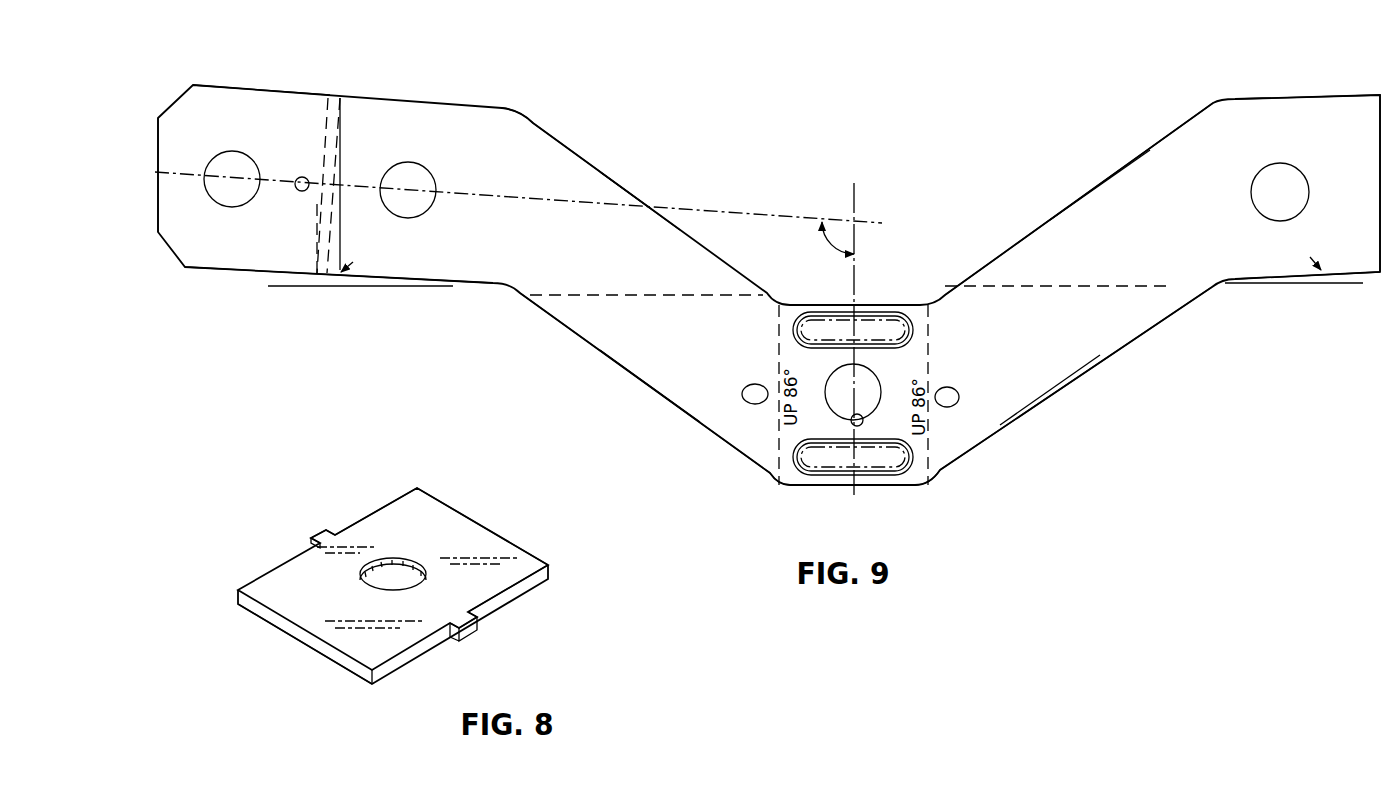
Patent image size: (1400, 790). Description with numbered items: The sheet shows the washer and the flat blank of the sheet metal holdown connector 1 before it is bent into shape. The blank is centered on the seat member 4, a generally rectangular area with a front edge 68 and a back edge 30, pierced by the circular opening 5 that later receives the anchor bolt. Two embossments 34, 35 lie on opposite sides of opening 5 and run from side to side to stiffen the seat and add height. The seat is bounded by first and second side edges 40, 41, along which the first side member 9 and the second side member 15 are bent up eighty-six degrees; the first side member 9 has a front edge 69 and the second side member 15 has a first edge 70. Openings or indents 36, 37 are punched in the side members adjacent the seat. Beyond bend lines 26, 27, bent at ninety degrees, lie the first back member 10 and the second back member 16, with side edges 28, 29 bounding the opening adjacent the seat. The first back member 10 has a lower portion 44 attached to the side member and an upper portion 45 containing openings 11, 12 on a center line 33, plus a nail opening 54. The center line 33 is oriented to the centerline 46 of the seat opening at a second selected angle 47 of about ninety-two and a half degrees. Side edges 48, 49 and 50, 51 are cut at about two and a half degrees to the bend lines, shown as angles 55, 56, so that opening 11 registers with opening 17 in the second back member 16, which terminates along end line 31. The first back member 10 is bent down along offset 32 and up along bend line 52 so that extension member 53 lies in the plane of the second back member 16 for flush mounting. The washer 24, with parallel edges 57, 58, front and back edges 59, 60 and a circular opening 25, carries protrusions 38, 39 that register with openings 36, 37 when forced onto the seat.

In FIG. 9, the structural holdown connector 1 is at (1113, 357).
In FIG. 9, the seat member 4 is at (913, 487).
In FIG. 9, the opening 5 is at (855, 421).
In FIG. 9, the first side member 9 is at (650, 338).
In FIG. 9, the first back member 10 is at (506, 106).
In FIG. 9, the opening 11 is at (423, 176).
In FIG. 9, the opening 12 is at (237, 160).
In FIG. 9, the second side member 15 is at (1030, 343).
In FIG. 9, the second back member 16 is at (1176, 127).
In FIG. 9, the opening 17 is at (1289, 173).
In FIG. 8, the washer 24 is at (455, 500).
In FIG. 8, the circular opening 25 is at (405, 562).
In FIG. 9, the bend line 26 is at (722, 294).
In FIG. 9, the bend line 27 is at (1163, 287).
In FIG. 9, the side edge 28 is at (633, 196).
In FIG. 9, the side edge 29 is at (1096, 183).
In FIG. 9, the back edge 30 is at (862, 305).
In FIG. 9, the end line 31 is at (1383, 110).
In FIG. 9, the offset 32 is at (340, 132).
In FIG. 9, the center line 33 is at (484, 192).
In FIG. 9, the embossment 34 is at (864, 487).
In FIG. 9, the embossment 35 is at (884, 312).
In FIG. 9, the opening 36 is at (755, 386).
In FIG. 9, the opening 37 is at (949, 389).
In FIG. 8, the protrusion 38 is at (320, 531).
In FIG. 8, the protrusion 39 is at (477, 633).
In FIG. 9, the first side edge 40 is at (777, 331).
In FIG. 9, the second side edge 41 is at (930, 338).
In FIG. 9, the lower portion 44 is at (570, 243).
In FIG. 9, the upper portion 45 is at (376, 137).
In FIG. 9, the centerline 46 is at (856, 359).
In FIG. 9, the second selected angle 47 is at (829, 241).
In FIG. 9, the side edge 48 is at (217, 270).
In FIG. 9, the side edge 49 is at (270, 91).
In FIG. 9, the side edge 50 is at (1367, 274).
In FIG. 9, the side edge 51 is at (1320, 95).
In FIG. 9, the bend line 52 is at (318, 242).
In FIG. 9, the extension member 53 is at (198, 122).
In FIG. 9, the nail opening 54 is at (298, 190).
In FIG. 9, the angle 55 is at (338, 292).
In FIG. 9, the angle 56 is at (1320, 287).
In FIG. 8, the edge 57 is at (385, 502).
In FIG. 8, the edge 58 is at (523, 592).
In FIG. 8, the front edge 59 is at (312, 640).
In FIG. 8, the back edge 60 is at (494, 530).
In FIG. 9, the front edge 68 is at (810, 487).
In FIG. 9, the front edge 69 is at (631, 375).
In FIG. 9, the first edge 70 is at (1053, 388).